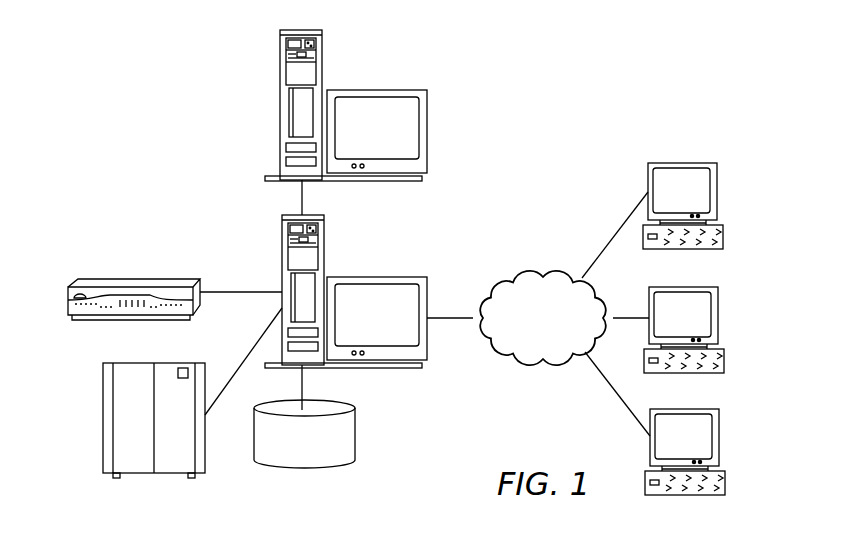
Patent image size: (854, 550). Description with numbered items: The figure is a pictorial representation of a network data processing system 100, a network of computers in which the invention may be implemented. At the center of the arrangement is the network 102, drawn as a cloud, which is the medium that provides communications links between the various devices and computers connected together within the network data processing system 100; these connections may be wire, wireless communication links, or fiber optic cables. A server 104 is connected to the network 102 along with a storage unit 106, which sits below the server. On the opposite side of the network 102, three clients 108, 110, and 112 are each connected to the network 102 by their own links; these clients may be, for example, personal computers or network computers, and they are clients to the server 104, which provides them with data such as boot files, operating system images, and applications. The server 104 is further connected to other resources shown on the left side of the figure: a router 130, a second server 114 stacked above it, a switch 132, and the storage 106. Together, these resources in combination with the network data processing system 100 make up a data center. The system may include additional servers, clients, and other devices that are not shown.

The network data processing system 100 is at (590, 180).
The network 102 is at (512, 269).
The server 104 is at (282, 252).
The storage unit 106 is at (355, 440).
The client 108 is at (717, 193).
The client 110 is at (718, 316).
The client 112 is at (719, 440).
The server 114 is at (280, 105).
The router 130 is at (138, 279).
The switch 132 is at (103, 418).